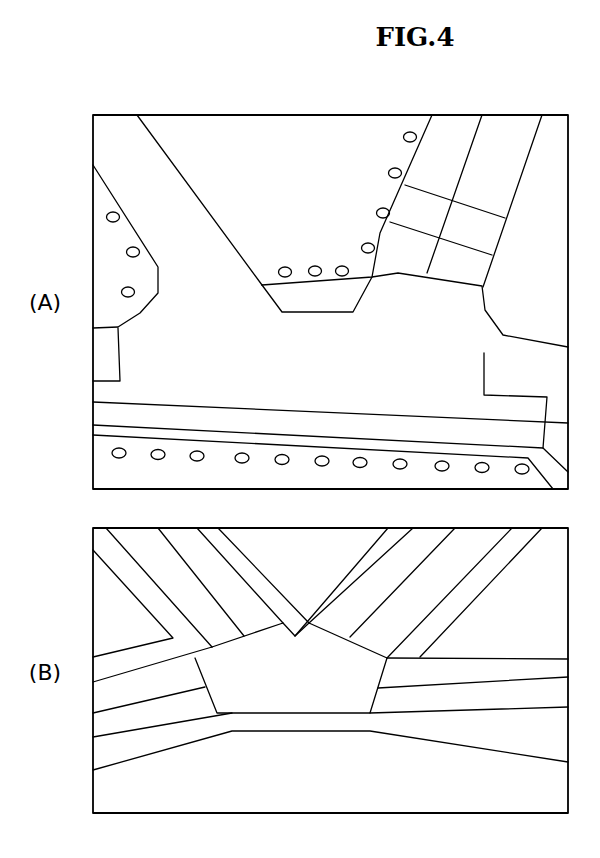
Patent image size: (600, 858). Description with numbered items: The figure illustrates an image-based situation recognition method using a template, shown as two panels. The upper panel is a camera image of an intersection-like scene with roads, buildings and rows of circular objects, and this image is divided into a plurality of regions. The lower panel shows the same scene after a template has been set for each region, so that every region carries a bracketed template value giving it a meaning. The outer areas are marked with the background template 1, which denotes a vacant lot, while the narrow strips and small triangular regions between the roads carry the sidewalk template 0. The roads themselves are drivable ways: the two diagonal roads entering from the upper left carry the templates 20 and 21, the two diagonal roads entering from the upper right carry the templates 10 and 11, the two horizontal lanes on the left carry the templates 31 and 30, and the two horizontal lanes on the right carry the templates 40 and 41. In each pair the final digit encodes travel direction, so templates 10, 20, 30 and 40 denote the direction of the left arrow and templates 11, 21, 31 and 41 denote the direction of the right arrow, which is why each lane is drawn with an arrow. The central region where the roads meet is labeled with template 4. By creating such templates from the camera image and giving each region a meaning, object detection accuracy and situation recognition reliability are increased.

The template [0] 0 is at (330, 649).
The template [1] 1 is at (330, 670).
The intersection region 4 is at (291, 668).
The template [10] 10 is at (415, 548).
The template [11] 11 is at (393, 656).
The template [20] 20 is at (201, 600).
The template [21] 21 is at (196, 555).
The template [30] 30 is at (175, 708).
The template [31] 31 is at (113, 699).
The template [40] 40 is at (512, 685).
The template [41] 41 is at (505, 714).